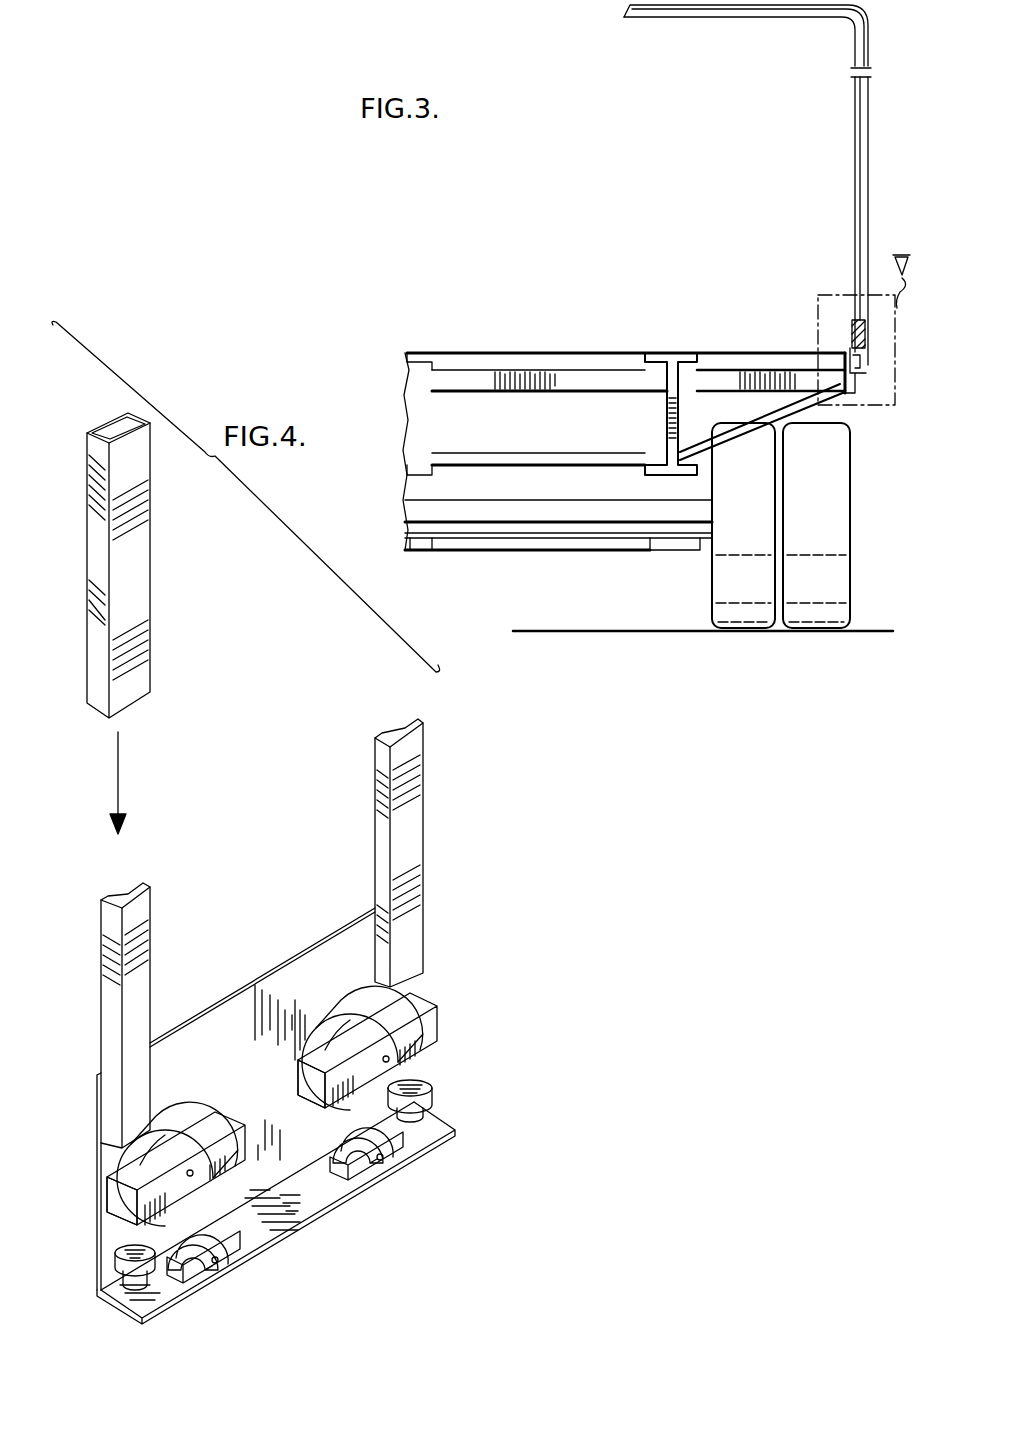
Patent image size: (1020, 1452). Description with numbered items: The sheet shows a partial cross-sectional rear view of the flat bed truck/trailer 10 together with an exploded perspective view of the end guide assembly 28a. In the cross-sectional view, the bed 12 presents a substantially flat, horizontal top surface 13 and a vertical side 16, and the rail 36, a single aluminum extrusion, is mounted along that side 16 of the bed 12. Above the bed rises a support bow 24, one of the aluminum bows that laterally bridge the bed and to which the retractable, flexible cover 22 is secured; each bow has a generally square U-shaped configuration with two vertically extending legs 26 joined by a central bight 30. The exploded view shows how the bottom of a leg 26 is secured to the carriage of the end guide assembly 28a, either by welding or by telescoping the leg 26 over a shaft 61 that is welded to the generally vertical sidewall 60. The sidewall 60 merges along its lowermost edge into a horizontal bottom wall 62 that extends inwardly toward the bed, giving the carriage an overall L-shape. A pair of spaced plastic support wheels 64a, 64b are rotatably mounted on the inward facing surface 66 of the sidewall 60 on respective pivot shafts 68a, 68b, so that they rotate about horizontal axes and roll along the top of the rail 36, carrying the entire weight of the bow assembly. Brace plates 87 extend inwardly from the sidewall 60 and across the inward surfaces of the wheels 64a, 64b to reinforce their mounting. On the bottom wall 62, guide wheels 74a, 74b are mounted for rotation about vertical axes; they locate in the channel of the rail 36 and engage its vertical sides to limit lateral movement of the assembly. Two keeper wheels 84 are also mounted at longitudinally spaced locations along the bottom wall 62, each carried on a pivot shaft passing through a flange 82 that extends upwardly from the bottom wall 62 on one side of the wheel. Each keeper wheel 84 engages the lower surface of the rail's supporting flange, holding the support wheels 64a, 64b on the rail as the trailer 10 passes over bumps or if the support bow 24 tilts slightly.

In FIG. 3, the flat bed truck/trailer 10 is at (575, 336).
In FIG. 3, the bed 12 is at (485, 360).
In FIG. 3, the top surface 13 is at (720, 353).
In FIG. 3, the vertical side 16 is at (848, 398).
In FIG. 3, the retractable flexible cover 22 is at (867, 230).
In FIG. 3, the support bow 24 is at (842, 54).
In FIG. 3, the leg 26 is at (854, 156).
In FIG. 4, the leg 26 is at (137, 578).
In FIG. 4, the end guide assembly 28a is at (72, 1013).
In FIG. 3, the central bight 30 is at (688, 18).
In FIG. 3, the rail 36 is at (865, 378).
In FIG. 4, the sidewall 60 is at (270, 978).
In FIG. 4, the shaft 61 is at (147, 923).
In FIG. 4, the bottom wall 62 is at (300, 1198).
In FIG. 4, the support wheel 64a is at (346, 1024).
In FIG. 4, the support wheel 64b is at (193, 1110).
In FIG. 4, the inward facing surface 66 is at (256, 1057).
In FIG. 4, the pivot shaft 68a is at (427, 1055).
In FIG. 4, the pivot shaft 68b is at (250, 1167).
In FIG. 4, the guide wheel 74a is at (433, 1102).
In FIG. 4, the guide wheel 74b is at (115, 1270).
In FIG. 4, the flange 82 is at (197, 1270).
In FIG. 4, the keeper wheel 84 is at (233, 1257).
In FIG. 4, the brace plate 87 is at (117, 1197).